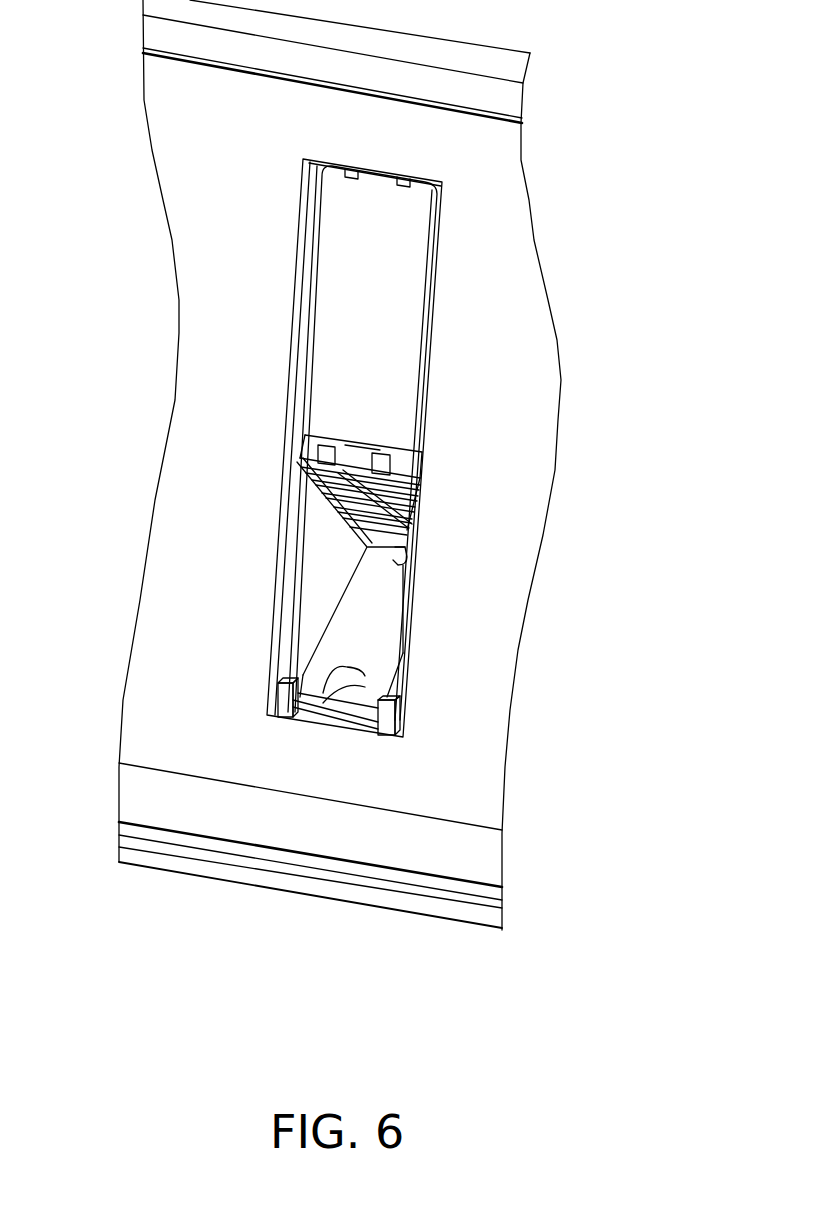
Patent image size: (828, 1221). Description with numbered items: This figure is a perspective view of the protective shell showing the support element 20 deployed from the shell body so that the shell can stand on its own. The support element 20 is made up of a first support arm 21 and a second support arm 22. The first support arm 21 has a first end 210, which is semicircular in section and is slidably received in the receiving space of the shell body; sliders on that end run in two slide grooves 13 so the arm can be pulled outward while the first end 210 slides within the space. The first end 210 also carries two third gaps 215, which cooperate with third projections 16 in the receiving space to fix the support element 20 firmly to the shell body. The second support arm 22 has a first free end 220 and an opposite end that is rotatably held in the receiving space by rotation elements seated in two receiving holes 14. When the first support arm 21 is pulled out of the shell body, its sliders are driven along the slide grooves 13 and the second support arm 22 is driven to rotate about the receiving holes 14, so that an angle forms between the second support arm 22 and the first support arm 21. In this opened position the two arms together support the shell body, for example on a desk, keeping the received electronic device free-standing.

The slide groove 13 is at (305, 277).
The receiving hole 14 is at (405, 712).
The third projection 16 is at (402, 186).
The support element 20 is at (484, 511).
The first support arm 21 is at (467, 435).
The first end 210 is at (352, 462).
The third gap 215 is at (383, 457).
The second support arm 22 is at (453, 625).
The first free end 220 is at (382, 667).